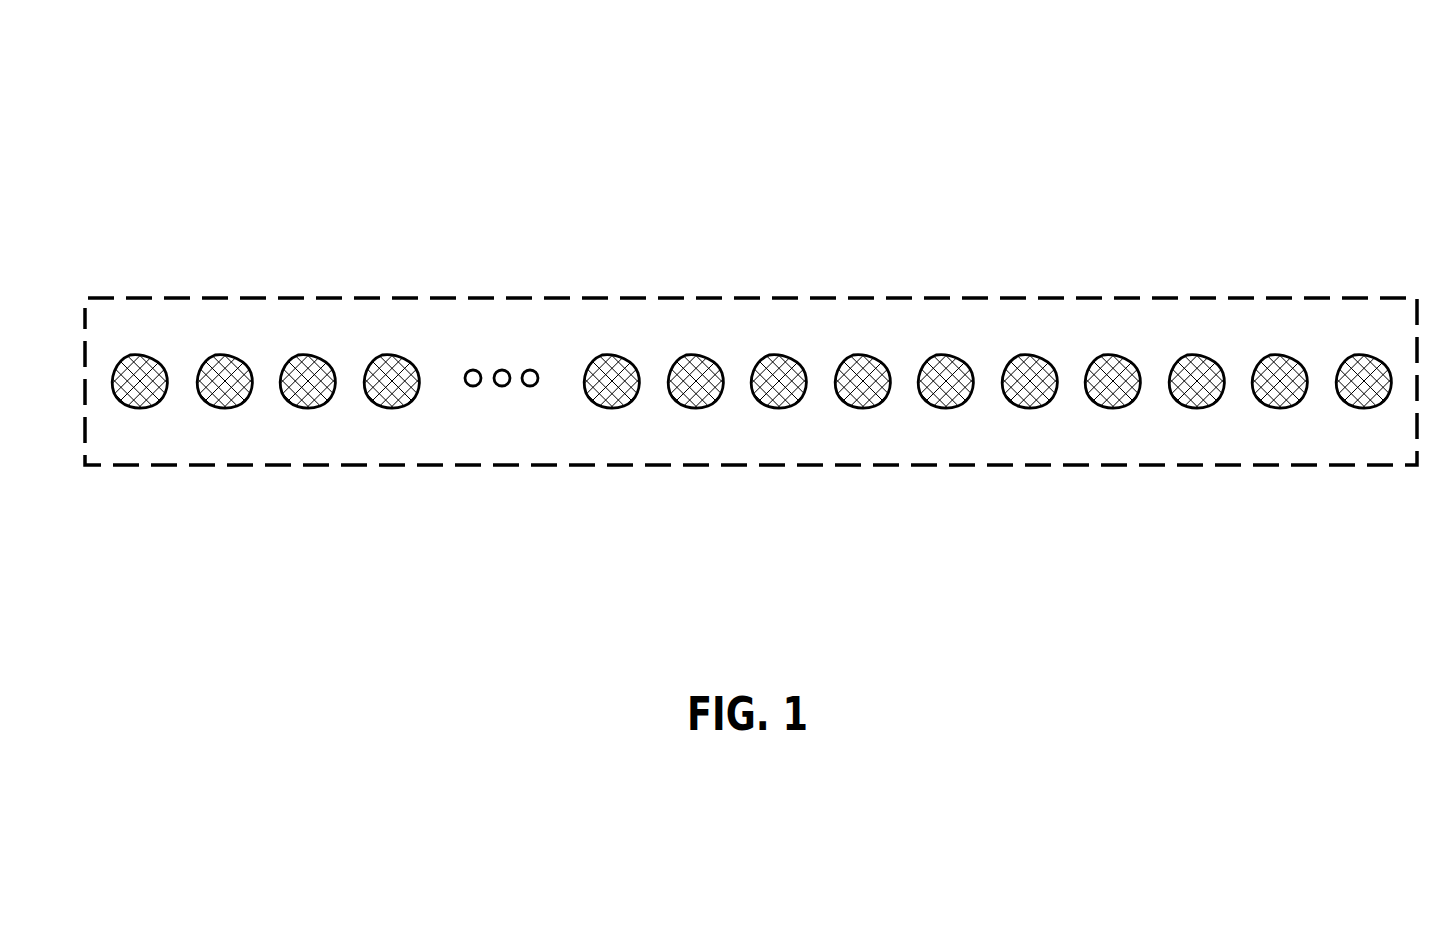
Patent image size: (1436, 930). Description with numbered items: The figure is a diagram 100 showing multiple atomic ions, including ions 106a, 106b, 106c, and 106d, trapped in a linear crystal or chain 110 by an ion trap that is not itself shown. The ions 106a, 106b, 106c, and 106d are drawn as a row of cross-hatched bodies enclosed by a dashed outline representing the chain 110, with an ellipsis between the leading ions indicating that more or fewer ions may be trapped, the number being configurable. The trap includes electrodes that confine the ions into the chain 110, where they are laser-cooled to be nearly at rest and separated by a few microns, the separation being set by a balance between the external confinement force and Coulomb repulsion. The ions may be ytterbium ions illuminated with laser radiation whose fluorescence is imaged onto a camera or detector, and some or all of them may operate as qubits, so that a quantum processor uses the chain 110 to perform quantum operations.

The diagram 100 is at (245, 54).
The linear crystal or chain 110 is at (816, 290).
The ion 106a is at (173, 358).
The ion 106b is at (253, 358).
The ion 106c is at (1307, 354).
The ion 106d is at (1388, 354).